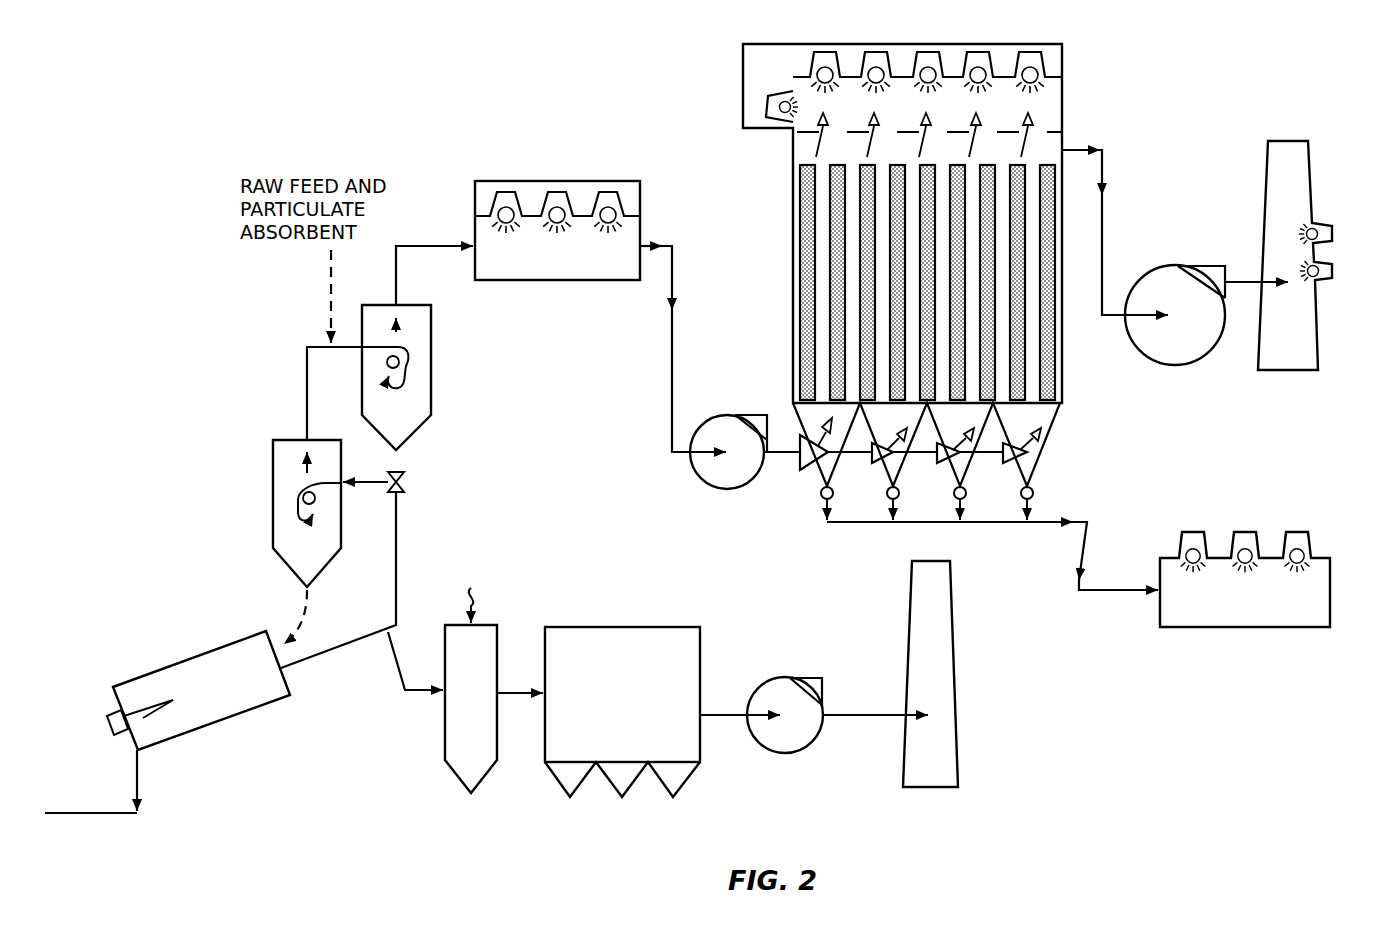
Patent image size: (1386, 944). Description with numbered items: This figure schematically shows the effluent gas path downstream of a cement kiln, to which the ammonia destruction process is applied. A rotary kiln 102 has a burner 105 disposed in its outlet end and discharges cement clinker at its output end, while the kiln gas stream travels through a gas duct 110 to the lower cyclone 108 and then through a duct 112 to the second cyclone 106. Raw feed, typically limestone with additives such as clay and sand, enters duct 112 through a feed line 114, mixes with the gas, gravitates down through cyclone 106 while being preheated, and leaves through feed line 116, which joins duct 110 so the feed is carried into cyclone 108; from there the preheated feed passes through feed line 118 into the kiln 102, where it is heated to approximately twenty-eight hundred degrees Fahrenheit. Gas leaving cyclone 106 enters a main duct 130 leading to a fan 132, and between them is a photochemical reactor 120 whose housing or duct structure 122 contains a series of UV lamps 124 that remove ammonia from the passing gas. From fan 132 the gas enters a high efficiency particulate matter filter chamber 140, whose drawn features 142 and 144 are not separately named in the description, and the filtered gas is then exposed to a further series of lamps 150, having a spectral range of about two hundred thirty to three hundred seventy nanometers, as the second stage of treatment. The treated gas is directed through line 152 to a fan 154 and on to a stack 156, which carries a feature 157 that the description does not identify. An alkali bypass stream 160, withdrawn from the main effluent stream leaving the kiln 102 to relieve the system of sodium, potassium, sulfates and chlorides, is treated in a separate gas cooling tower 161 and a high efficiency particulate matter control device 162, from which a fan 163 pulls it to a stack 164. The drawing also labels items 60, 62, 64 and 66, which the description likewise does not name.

The rotary kiln 102 is at (184, 722).
The burner 105 is at (145, 715).
The second cyclone 106 is at (431, 362).
The lower cyclone 108 is at (273, 481).
The gas duct 110 is at (396, 546).
The duct 112 is at (307, 380).
The feed line 114 is at (330, 290).
The feed line 116 is at (398, 458).
The feed line 118 is at (300, 604).
The photochemical reactor 120 is at (569, 255).
The housing or duct structure 122 is at (607, 281).
The UV lamps 124 is at (608, 207).
The main duct 130 is at (397, 290).
The fan 132 is at (711, 478).
The high efficiency particulate matter filter chamber 140 is at (907, 267).
The baghouse housing 142 is at (1063, 368).
The filter bags 144 is at (807, 312).
The lamps 150 is at (1030, 53).
The line 152 is at (1103, 232).
The fan 154 is at (1173, 367).
The stack 156 is at (1290, 255).
The stack nozzles 157 is at (1318, 222).
The alkali bypass stream 160 is at (401, 680).
The gas cooling tower 161 is at (445, 736).
The high efficiency particulate matter control device 162 is at (647, 627).
The fan 163 is at (793, 742).
The stack 164 is at (955, 638).
The air injection nozzles 60 is at (882, 468).
The collected particulate conveying line 62 is at (985, 523).
The reactor 64 is at (1254, 580).
The reactor spray nozzles 66 is at (1298, 533).